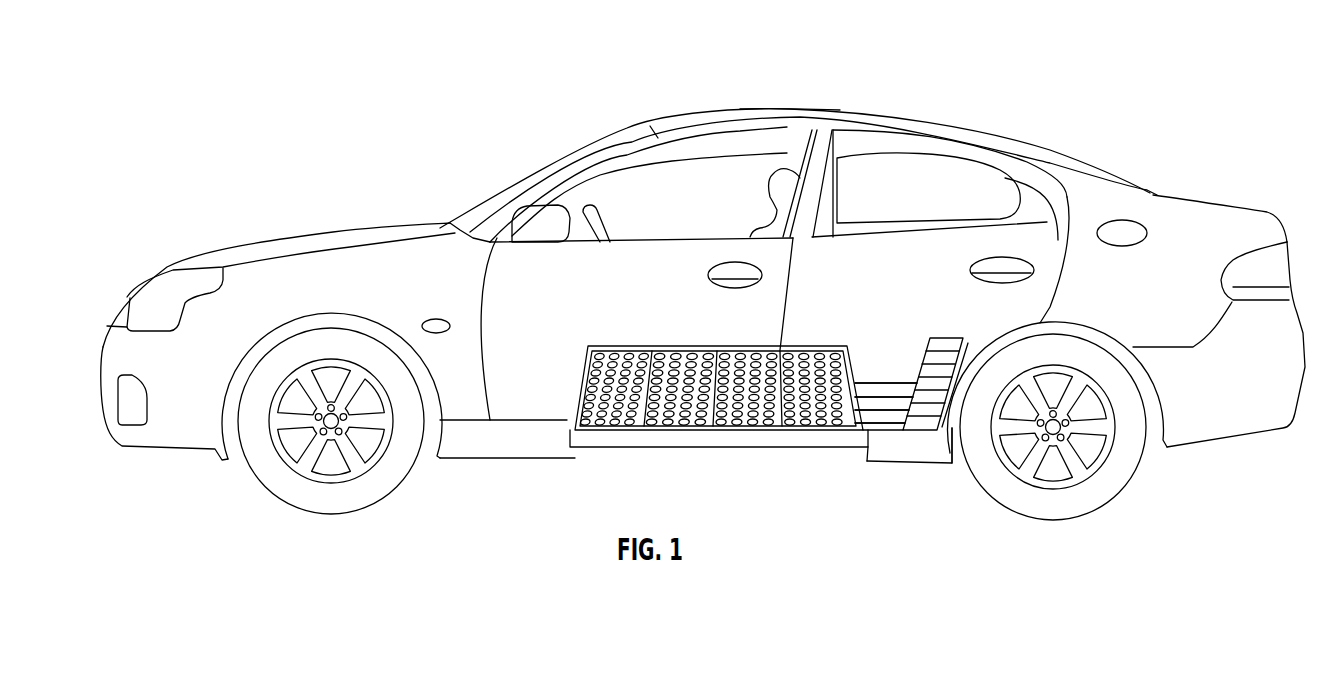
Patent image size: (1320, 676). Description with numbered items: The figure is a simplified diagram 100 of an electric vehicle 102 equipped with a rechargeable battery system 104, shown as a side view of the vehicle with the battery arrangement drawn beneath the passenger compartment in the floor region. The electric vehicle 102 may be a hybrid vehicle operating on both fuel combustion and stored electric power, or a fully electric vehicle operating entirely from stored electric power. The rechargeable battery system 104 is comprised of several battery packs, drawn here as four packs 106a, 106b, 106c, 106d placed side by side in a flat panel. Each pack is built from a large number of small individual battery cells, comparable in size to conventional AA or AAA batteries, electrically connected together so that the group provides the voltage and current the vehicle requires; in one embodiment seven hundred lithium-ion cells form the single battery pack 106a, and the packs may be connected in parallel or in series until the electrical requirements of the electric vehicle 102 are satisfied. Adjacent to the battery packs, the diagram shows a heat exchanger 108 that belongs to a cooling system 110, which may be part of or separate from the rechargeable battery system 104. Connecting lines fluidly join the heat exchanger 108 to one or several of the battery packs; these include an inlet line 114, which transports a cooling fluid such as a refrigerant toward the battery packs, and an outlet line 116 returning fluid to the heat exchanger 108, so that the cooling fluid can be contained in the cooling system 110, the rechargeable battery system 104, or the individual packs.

The simplified diagram 100 is at (428, 87).
The electric vehicle 102 is at (797, 110).
The rechargeable battery system 104 is at (733, 448).
The battery pack 106a is at (603, 346).
The battery pack 106b is at (677, 346).
The battery pack 106c is at (753, 346).
The battery pack 106d is at (827, 346).
The heat exchanger 108 is at (965, 344).
The cooling system 110 is at (913, 323).
The inlet line 114 is at (870, 383).
The outlet line 116 is at (884, 428).